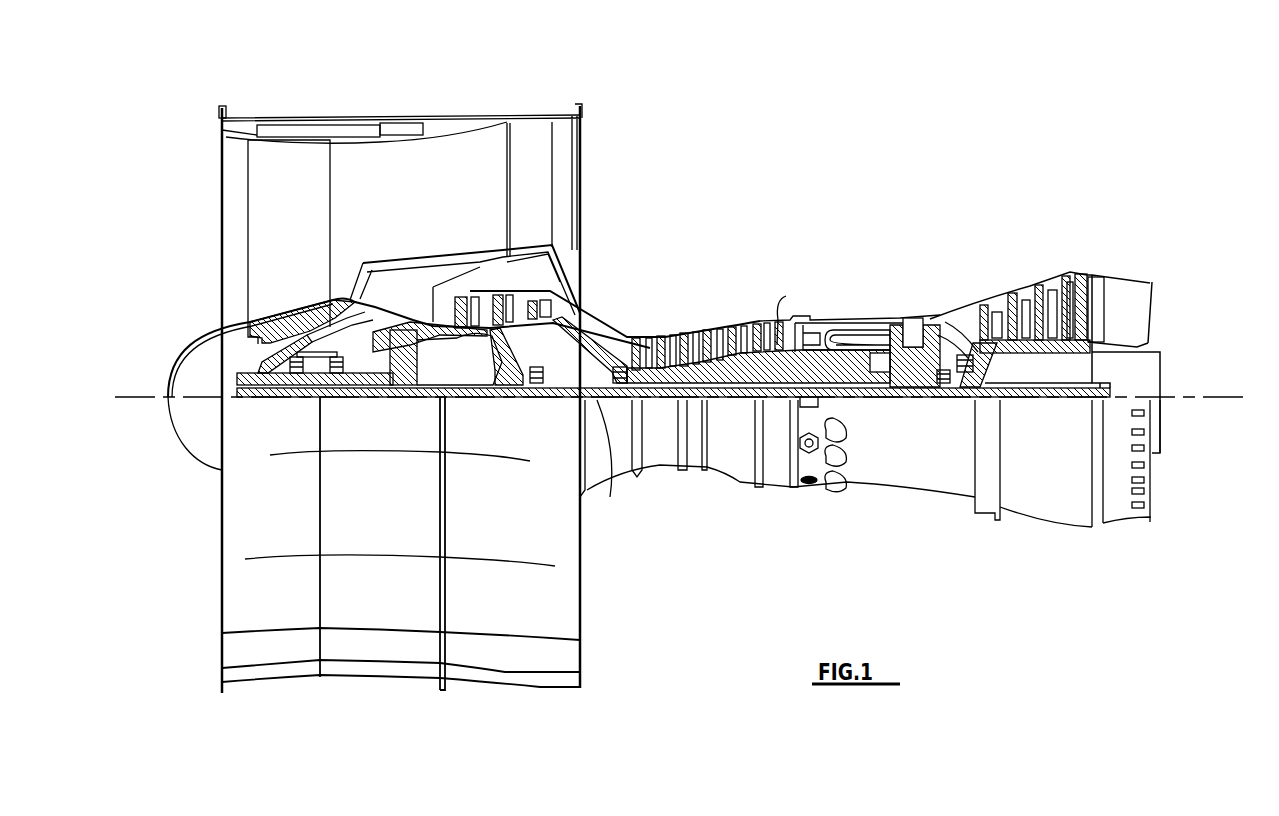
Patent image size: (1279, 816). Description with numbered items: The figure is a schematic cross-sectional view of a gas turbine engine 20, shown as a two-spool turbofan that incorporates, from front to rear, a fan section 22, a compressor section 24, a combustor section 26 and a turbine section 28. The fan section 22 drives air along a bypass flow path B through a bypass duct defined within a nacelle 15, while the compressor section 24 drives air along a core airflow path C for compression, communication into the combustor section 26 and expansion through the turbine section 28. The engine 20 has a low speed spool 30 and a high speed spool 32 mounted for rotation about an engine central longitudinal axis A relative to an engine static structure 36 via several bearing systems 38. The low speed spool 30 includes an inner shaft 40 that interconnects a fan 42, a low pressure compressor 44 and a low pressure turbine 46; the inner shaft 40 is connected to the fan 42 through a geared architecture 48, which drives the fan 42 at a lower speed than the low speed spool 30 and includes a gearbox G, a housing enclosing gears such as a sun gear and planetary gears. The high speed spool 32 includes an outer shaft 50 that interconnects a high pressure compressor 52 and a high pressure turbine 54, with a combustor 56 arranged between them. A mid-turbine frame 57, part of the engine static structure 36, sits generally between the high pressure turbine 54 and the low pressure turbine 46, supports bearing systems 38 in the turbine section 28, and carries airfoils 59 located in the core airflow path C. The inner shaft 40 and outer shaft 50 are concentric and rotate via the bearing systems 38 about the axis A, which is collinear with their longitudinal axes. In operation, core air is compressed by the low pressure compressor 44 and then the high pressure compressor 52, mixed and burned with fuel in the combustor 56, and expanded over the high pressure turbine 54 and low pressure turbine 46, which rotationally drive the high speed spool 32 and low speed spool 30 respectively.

The nacelle 15 is at (397, 118).
The gas turbine engine 20 is at (859, 161).
The fan section 22 is at (327, 108).
The compressor section 24 is at (631, 299).
The combustor section 26 is at (849, 294).
The turbine section 28 is at (997, 257).
The low speed spool 30 is at (735, 411).
The high speed spool 32 is at (799, 313).
The engine static structure 36 is at (771, 494).
The bearing systems 38 is at (537, 398).
The inner shaft 40 is at (607, 498).
The fan 42 is at (305, 245).
The low pressure compressor 44 is at (512, 305).
The low pressure turbine 46 is at (1038, 292).
The geared architecture 48 is at (403, 380).
The outer shaft 50 is at (862, 398).
The high pressure compressor 52 is at (708, 355).
The high pressure turbine 54 is at (912, 320).
The combustor 56 is at (850, 348).
The mid-turbine frame 57 is at (962, 300).
The airfoils 59 is at (955, 335).
The engine central longitudinal axis A is at (1241, 397).
The bypass flow path B is at (302, 190).
The core airflow path C is at (402, 297).
The gearbox G is at (420, 352).